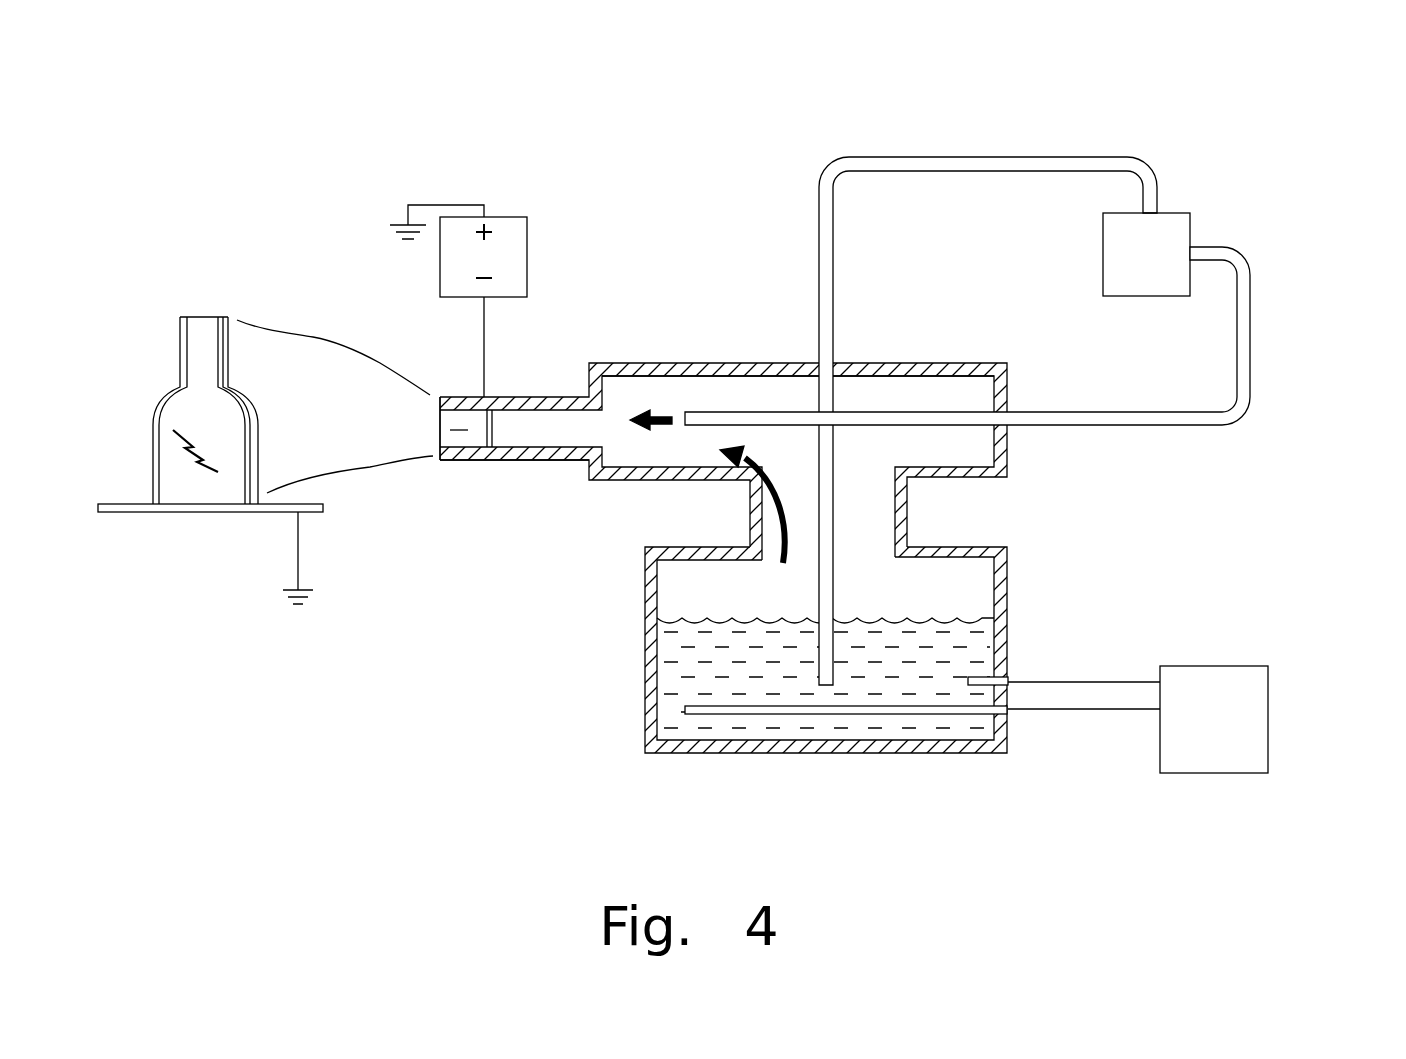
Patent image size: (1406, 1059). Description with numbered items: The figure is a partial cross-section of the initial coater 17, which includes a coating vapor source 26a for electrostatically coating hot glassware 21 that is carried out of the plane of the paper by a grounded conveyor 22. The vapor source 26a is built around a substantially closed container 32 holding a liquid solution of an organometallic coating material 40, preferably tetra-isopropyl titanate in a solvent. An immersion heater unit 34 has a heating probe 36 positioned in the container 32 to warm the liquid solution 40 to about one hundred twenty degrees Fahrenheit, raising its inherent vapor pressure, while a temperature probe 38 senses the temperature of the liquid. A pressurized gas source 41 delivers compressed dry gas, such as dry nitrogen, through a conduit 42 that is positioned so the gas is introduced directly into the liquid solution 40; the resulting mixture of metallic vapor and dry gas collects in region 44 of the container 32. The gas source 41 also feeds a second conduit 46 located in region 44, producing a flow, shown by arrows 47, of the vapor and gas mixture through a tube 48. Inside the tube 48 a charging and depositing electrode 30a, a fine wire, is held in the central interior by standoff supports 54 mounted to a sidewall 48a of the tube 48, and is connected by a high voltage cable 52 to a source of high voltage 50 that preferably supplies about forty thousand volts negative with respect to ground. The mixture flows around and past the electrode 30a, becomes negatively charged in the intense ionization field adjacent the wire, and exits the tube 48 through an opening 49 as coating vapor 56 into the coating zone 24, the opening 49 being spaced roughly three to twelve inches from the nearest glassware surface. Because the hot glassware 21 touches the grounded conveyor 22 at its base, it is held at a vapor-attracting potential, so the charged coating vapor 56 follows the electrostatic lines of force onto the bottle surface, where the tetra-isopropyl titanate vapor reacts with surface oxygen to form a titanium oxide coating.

The initial coater 17 is at (1322, 306).
The glassware 21 is at (213, 329).
The grounded conveyor 22 is at (278, 513).
The coating zone 24 is at (190, 243).
The coating vapor source 26a is at (948, 362).
The charging and depositing electrode 30a is at (447, 433).
The substantially closed container 32 is at (645, 672).
The immersion heater unit 34 is at (1235, 666).
The heating probe 36 is at (775, 715).
The temperature probe 38 is at (985, 678).
The liquid solution of organometallic coating material 40 is at (825, 673).
The pressurized gas source 41 is at (1180, 213).
The conduit 42 is at (833, 257).
The region 44 is at (878, 462).
The second conduit 46 is at (1108, 427).
The arrows 47 is at (660, 417).
The tube 48 is at (557, 395).
The sidewall 48a is at (570, 443).
The opening 49 is at (440, 420).
The source of high voltage 50 is at (527, 258).
The high voltage cable 52 is at (487, 347).
The standoff supports 54 is at (487, 420).
The coating vapor 56 is at (322, 403).